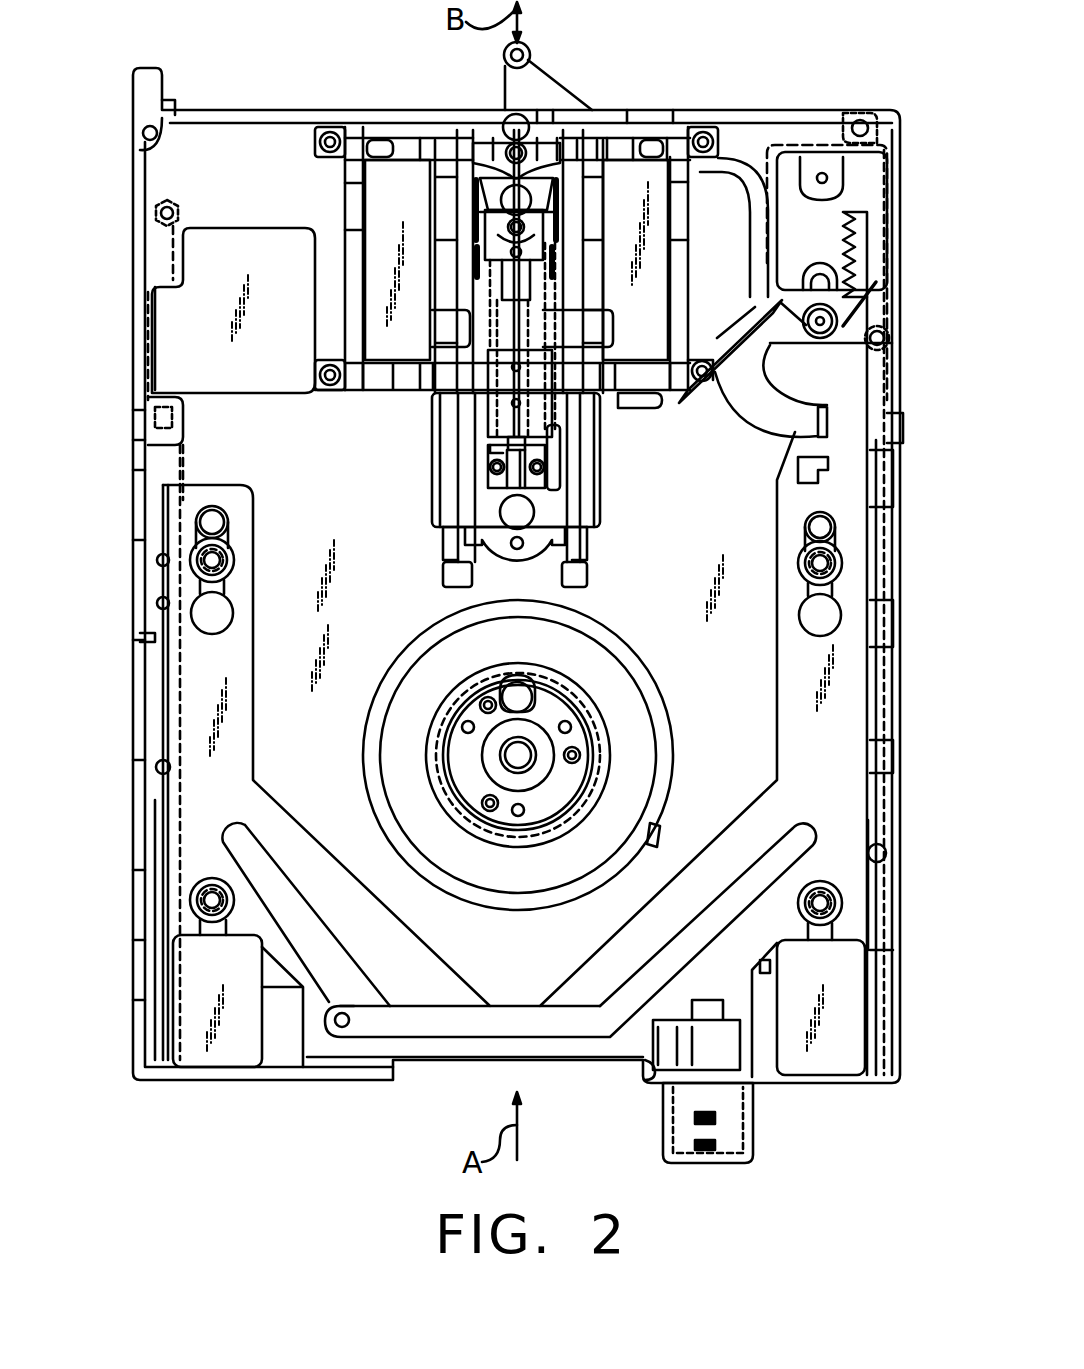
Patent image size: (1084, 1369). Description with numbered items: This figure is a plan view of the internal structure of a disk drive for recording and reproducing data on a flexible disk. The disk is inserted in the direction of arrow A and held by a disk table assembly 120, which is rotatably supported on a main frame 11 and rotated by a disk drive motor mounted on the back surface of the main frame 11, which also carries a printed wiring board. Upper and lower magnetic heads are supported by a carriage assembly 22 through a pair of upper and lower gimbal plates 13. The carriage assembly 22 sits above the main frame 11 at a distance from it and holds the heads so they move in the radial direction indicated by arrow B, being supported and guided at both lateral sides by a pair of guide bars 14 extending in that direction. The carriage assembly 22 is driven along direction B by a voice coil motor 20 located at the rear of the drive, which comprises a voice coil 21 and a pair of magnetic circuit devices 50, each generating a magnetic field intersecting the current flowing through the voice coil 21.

The main frame 11 is at (755, 750).
The gimbal plates 13 is at (545, 490).
The guide bars 14 is at (463, 487).
The voice coil motor 20 is at (353, 230).
The voice coil 21 is at (357, 213).
The carriage assembly 22 is at (540, 427).
The magnetic circuit devices 50 is at (647, 178).
The disk table assembly 120 is at (547, 670).